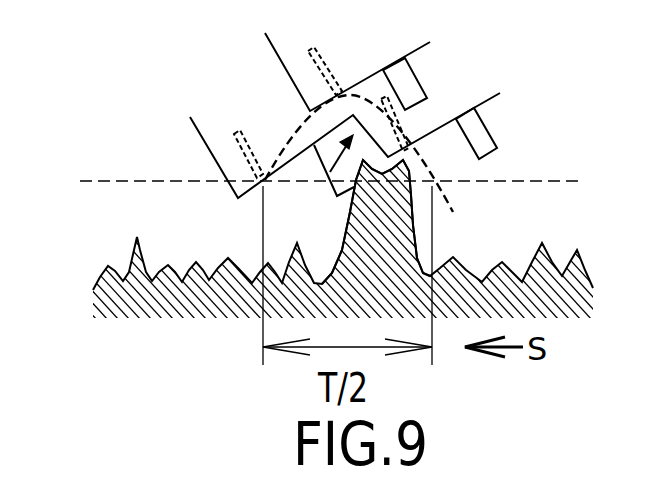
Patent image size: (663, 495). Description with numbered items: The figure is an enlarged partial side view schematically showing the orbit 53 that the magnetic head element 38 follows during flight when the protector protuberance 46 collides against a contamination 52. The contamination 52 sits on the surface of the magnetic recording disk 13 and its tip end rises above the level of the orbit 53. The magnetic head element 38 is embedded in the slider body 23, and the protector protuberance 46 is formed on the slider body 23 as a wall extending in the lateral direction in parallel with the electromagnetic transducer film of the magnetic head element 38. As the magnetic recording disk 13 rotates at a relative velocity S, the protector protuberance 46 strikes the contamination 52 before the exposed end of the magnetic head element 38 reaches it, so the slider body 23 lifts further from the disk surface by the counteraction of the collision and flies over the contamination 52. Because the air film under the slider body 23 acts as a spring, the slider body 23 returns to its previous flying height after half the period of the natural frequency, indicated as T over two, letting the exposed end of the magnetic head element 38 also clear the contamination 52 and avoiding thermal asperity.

The magnetic recording disk 13 is at (105, 270).
The slider body 23 is at (217, 161).
The magnetic head element 38 is at (327, 68).
The protector protuberance 46 is at (340, 197).
The contamination 52 is at (413, 223).
The orbit 53 is at (553, 182).